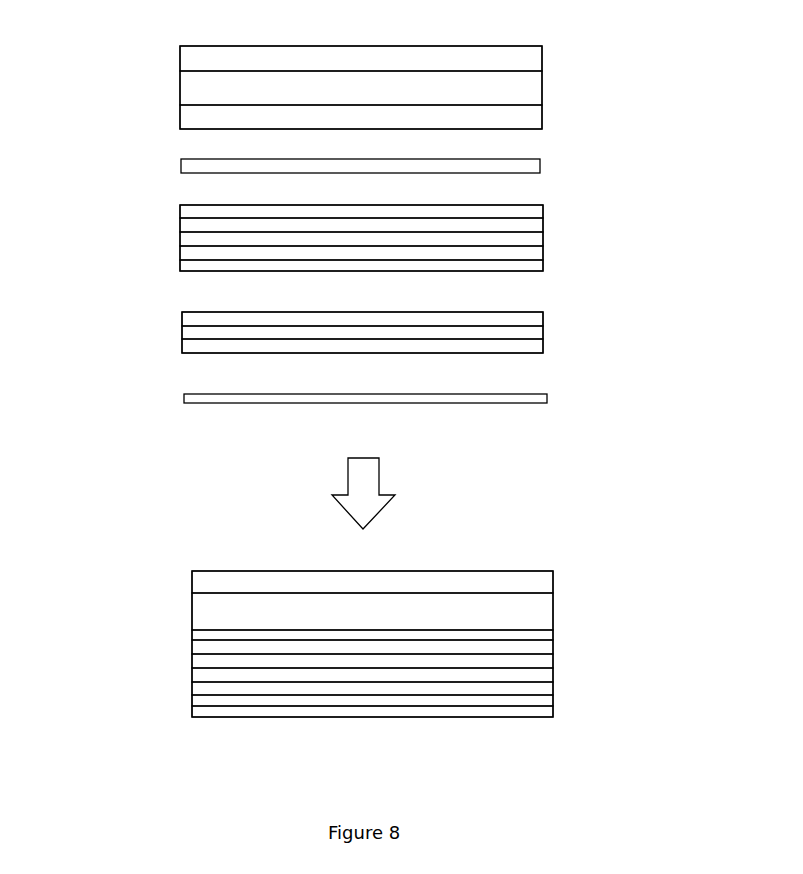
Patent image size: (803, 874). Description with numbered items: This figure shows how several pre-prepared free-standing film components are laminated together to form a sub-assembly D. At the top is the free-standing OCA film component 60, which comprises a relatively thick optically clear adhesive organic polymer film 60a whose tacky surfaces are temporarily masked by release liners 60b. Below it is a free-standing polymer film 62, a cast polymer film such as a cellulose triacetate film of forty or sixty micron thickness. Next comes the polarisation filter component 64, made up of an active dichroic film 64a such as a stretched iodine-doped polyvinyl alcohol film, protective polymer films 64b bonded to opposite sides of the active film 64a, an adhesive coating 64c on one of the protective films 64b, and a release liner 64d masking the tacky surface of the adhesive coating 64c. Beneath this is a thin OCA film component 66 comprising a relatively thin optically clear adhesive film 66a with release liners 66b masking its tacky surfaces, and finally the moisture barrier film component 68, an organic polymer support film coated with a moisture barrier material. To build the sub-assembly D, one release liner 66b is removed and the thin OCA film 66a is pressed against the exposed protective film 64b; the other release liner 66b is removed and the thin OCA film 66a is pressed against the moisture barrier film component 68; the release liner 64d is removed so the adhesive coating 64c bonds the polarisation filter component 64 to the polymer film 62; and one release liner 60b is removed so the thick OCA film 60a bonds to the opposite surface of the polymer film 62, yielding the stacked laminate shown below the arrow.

The free-standing OCA film component 60 is at (173, 46).
The thick OCA film 60a is at (533, 88).
The release liners 60b is at (532, 58).
The free-standing polymer film 62 is at (538, 166).
The polarisation filter component 64 is at (175, 205).
The active dichroic film 64a is at (542, 253).
The protective polymer films 64b is at (542, 240).
The adhesive coating 64c is at (542, 225).
The release liner 64d is at (542, 210).
The thin OCA film component 66 is at (173, 352).
The thin OCA film 66a is at (542, 332).
The release liners 66b is at (542, 318).
The moisture barrier film component 68 is at (547, 398).
The sub-assembly D is at (178, 571).